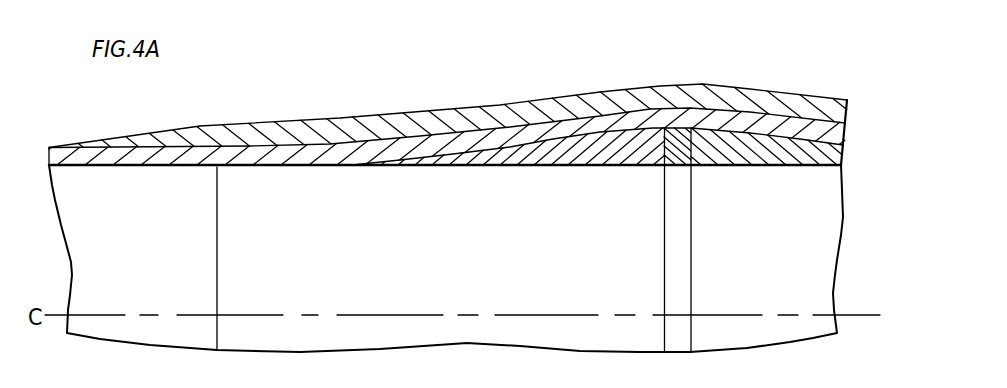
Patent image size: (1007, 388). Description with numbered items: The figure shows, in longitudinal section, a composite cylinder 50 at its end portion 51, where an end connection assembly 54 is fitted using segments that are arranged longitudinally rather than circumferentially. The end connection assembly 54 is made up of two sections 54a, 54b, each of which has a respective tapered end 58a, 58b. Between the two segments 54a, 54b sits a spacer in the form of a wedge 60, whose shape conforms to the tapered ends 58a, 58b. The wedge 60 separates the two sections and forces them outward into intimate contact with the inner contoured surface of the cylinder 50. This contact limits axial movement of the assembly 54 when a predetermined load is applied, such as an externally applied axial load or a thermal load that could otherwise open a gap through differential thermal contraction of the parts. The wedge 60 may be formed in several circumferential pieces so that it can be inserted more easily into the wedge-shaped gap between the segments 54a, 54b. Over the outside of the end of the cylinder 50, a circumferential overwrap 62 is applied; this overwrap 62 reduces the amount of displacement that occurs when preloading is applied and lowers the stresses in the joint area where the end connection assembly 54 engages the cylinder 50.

The composite cylinder 50 is at (70, 147).
The end portion 51 is at (448, 82).
The end connection assembly 54 is at (600, 94).
The section 54a is at (555, 146).
The section 54b is at (757, 138).
The tapered end 58a is at (657, 165).
The tapered end 58b is at (693, 163).
The wedge 60 is at (681, 132).
The circumferential overwrap 62 is at (312, 128).